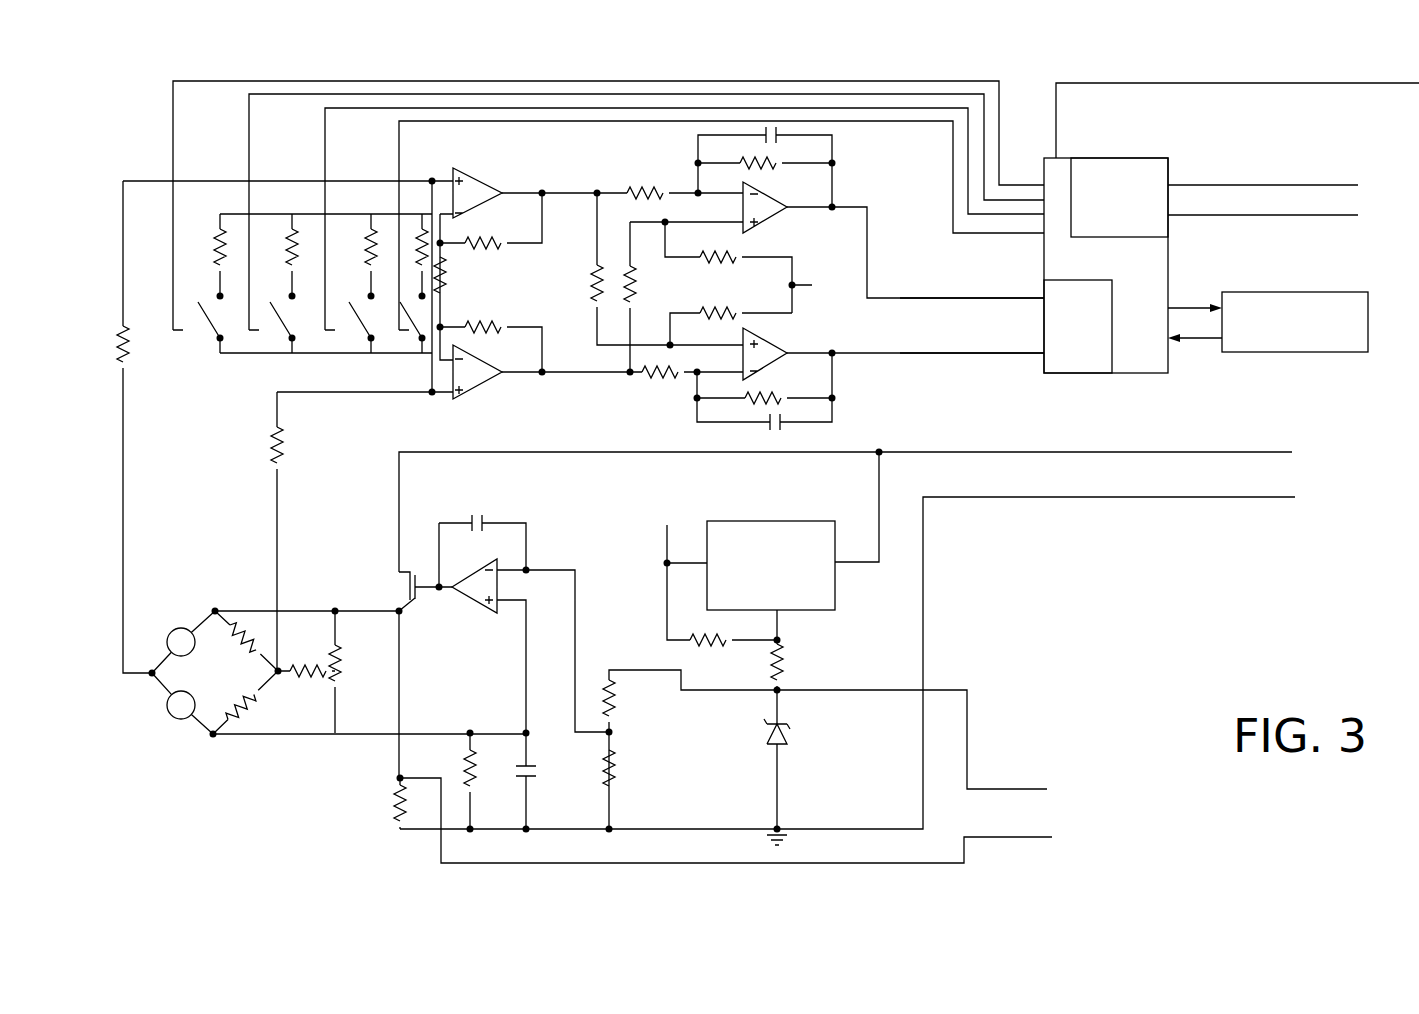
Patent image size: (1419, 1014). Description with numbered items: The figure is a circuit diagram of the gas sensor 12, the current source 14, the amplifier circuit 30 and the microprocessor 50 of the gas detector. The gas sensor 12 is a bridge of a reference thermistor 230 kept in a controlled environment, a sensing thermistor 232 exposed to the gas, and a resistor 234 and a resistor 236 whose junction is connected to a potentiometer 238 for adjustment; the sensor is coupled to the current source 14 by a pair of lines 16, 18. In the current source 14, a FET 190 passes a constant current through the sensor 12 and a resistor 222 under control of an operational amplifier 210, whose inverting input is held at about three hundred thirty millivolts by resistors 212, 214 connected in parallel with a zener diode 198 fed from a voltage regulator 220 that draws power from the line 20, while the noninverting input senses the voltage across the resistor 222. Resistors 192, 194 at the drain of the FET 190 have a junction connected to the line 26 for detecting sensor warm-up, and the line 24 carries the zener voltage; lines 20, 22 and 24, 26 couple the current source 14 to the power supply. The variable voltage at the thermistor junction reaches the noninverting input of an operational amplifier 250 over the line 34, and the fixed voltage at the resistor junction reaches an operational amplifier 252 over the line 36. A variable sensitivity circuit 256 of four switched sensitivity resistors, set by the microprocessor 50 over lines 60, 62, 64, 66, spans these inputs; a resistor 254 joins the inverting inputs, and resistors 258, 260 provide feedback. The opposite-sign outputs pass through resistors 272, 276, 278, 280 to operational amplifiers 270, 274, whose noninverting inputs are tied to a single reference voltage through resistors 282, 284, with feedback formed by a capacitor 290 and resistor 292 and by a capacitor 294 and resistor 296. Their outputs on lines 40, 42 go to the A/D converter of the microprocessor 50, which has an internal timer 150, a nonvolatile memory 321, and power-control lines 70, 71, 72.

The gas sensor 12 is at (219, 653).
The current source 14 is at (847, 640).
The line 16 is at (362, 611).
The line 18 is at (358, 733).
The line 20 is at (1168, 450).
The line 22 is at (1152, 497).
The line 24 is at (1024, 787).
The line 26 is at (1022, 837).
The amplifier circuit 30 is at (896, 305).
The line 34 is at (123, 500).
The line 36 is at (277, 500).
The line 40 is at (960, 298).
The line 42 is at (970, 353).
The microprocessor 50 is at (1135, 373).
The line 60 is at (173, 113).
The line 62 is at (249, 131).
The line 64 is at (325, 141).
The line 66 is at (399, 152).
The line 70 is at (1280, 216).
The line 71 is at (1342, 84).
The line 72 is at (1267, 184).
The internal timer 150 is at (1145, 157).
The FET 190 is at (408, 599).
The resistor 192 is at (402, 742).
The resistor 194 is at (398, 831).
The zener diode 198 is at (796, 741).
The operational amplifier 210 is at (490, 608).
The resistor 212 is at (613, 725).
The resistor 214 is at (611, 792).
The voltage regulator 220 is at (836, 598).
The resistor 222 is at (477, 778).
The reference thermistor 230 is at (176, 721).
The sensing thermistor 232 is at (174, 631).
The resistor 234 is at (237, 617).
The resistor 236 is at (261, 694).
The potentiometer 238 is at (346, 676).
The operational amplifier 250 is at (488, 181).
The operational amplifier 252 is at (482, 396).
The resistor 254 is at (449, 283).
The variable sensitivity circuit 256 is at (262, 381).
The resistor 258 is at (491, 221).
The resistor 260 is at (517, 326).
The operational amplifier 270 is at (780, 218).
The resistor 272 is at (657, 185).
The operational amplifier 274 is at (780, 344).
The resistor 276 is at (597, 276).
The resistor 278 is at (632, 285).
The resistor 280 is at (668, 380).
The resistor 282 is at (742, 255).
The resistor 284 is at (737, 313).
The capacitor 290 is at (778, 135).
The resistor 292 is at (765, 182).
The capacitor 294 is at (789, 431).
The resistor 296 is at (760, 400).
The nonvolatile memory 321 is at (1305, 353).